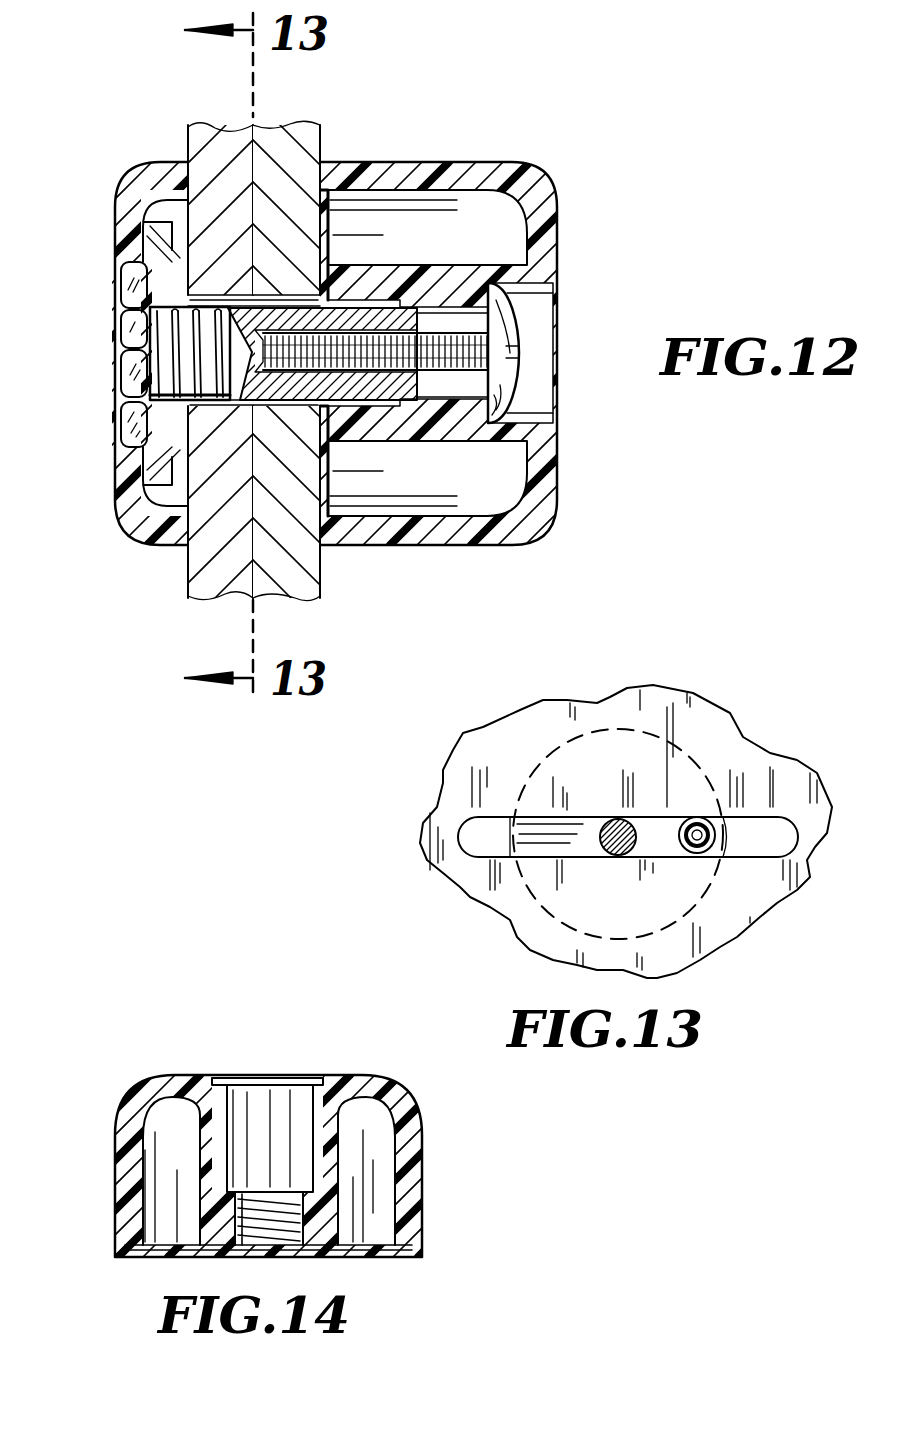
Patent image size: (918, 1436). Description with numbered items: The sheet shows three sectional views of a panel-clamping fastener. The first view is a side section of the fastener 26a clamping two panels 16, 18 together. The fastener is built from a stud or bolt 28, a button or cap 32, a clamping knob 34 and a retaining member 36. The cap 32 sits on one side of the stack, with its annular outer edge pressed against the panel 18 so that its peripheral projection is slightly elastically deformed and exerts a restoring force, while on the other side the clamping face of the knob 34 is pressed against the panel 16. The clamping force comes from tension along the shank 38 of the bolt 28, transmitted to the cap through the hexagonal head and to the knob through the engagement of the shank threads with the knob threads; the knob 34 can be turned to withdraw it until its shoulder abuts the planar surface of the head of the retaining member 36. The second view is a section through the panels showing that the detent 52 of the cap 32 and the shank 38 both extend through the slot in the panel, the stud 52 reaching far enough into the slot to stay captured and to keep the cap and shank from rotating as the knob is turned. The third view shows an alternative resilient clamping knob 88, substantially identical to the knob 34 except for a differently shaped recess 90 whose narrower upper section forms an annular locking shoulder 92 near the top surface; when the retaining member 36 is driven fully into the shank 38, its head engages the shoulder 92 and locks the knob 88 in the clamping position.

In FIG. 12, the panel 16 is at (297, 137).
In FIG. 12, the panel 18 is at (210, 133).
In FIG. 13, the panel 18 is at (743, 747).
In FIG. 13, the fastener 26a is at (750, 860).
In FIG. 12, the stud or bolt 28 is at (130, 384).
In FIG. 12, the button or cap 32 is at (130, 208).
In FIG. 13, the button or cap 32 is at (607, 727).
In FIG. 12, the clamping knob 34 is at (538, 208).
In FIG. 12, the retaining member 36 is at (504, 328).
In FIG. 12, the shank 38 is at (183, 340).
In FIG. 13, the shank 38 is at (617, 857).
In FIG. 13, the detent (stud) 52 is at (693, 857).
In FIG. 14, the clamping knob 88 is at (150, 1083).
In FIG. 14, the recess 90 is at (240, 1080).
In FIG. 14, the annular locking shoulder 92 is at (320, 1080).